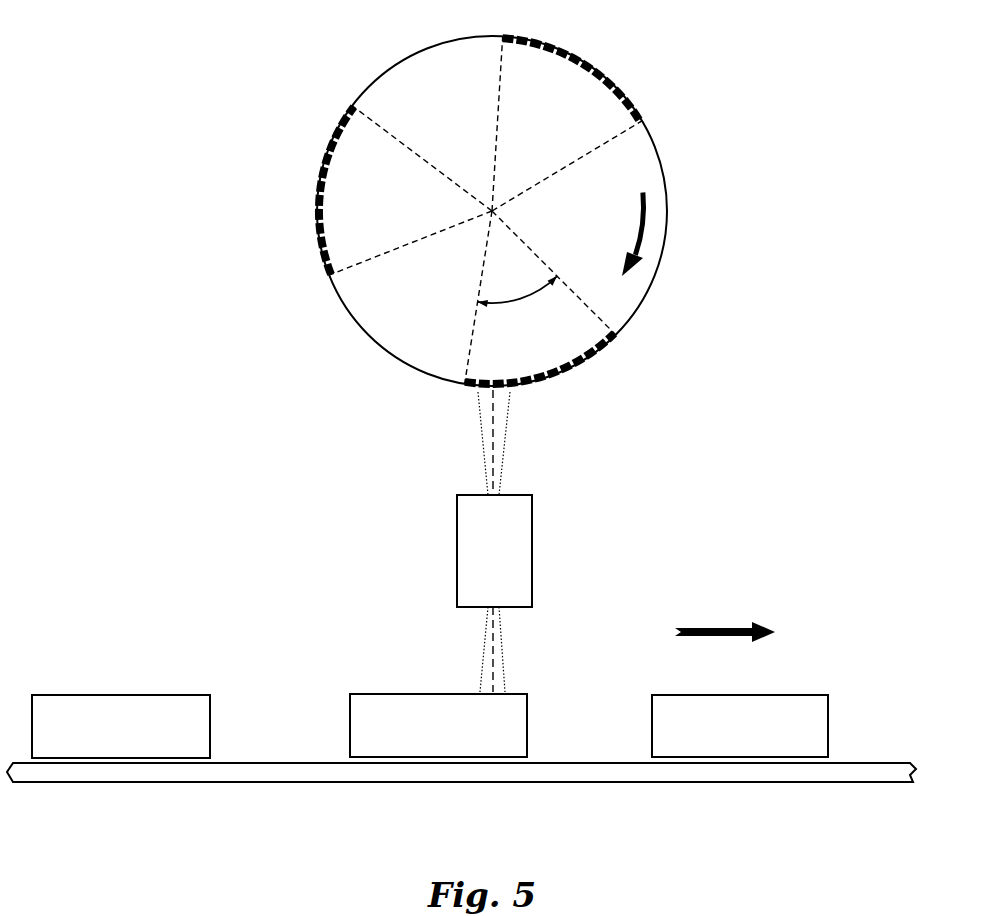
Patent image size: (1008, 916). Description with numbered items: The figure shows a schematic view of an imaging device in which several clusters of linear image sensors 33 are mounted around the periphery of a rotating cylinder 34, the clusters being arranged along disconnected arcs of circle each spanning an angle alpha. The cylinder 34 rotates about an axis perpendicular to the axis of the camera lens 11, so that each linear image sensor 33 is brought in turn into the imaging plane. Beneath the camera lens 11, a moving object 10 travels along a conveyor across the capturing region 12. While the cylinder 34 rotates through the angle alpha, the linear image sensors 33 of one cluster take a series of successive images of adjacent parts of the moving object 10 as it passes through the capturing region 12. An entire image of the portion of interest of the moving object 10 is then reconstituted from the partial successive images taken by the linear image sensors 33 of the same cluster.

The cylindrical sensor support 34 is at (410, 75).
The linear image sensors 33 is at (632, 90).
The camera lens 11 is at (473, 532).
The capturing region 12 is at (446, 652).
The moving object 10 is at (162, 707).